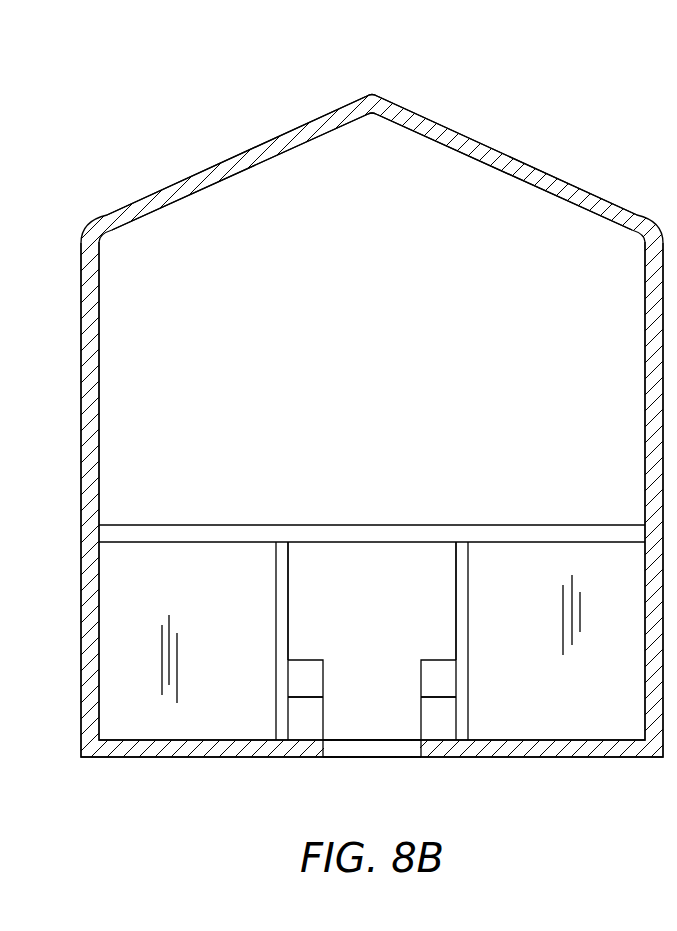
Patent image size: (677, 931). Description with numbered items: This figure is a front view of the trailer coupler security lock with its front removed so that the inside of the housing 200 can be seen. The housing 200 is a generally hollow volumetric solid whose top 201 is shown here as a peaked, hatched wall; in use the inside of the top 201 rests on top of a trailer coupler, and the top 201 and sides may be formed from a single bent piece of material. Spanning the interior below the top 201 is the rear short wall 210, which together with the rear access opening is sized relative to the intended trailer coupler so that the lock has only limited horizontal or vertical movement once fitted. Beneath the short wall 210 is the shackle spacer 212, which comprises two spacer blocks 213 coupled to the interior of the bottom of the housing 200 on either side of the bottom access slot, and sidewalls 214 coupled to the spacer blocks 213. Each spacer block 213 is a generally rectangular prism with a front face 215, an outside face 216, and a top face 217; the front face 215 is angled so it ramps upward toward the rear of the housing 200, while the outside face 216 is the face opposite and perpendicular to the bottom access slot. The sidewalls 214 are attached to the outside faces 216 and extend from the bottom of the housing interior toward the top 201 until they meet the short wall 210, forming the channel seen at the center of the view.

The housing 200 is at (548, 152).
The top 201 is at (175, 180).
The rear short wall 210 is at (130, 622).
The shackle spacer 212 is at (366, 563).
The spacer blocks 213 is at (307, 748).
The sidewalls 214 is at (274, 590).
The front face 215 is at (304, 712).
The outside face 216 is at (274, 712).
The top face 217 is at (312, 652).